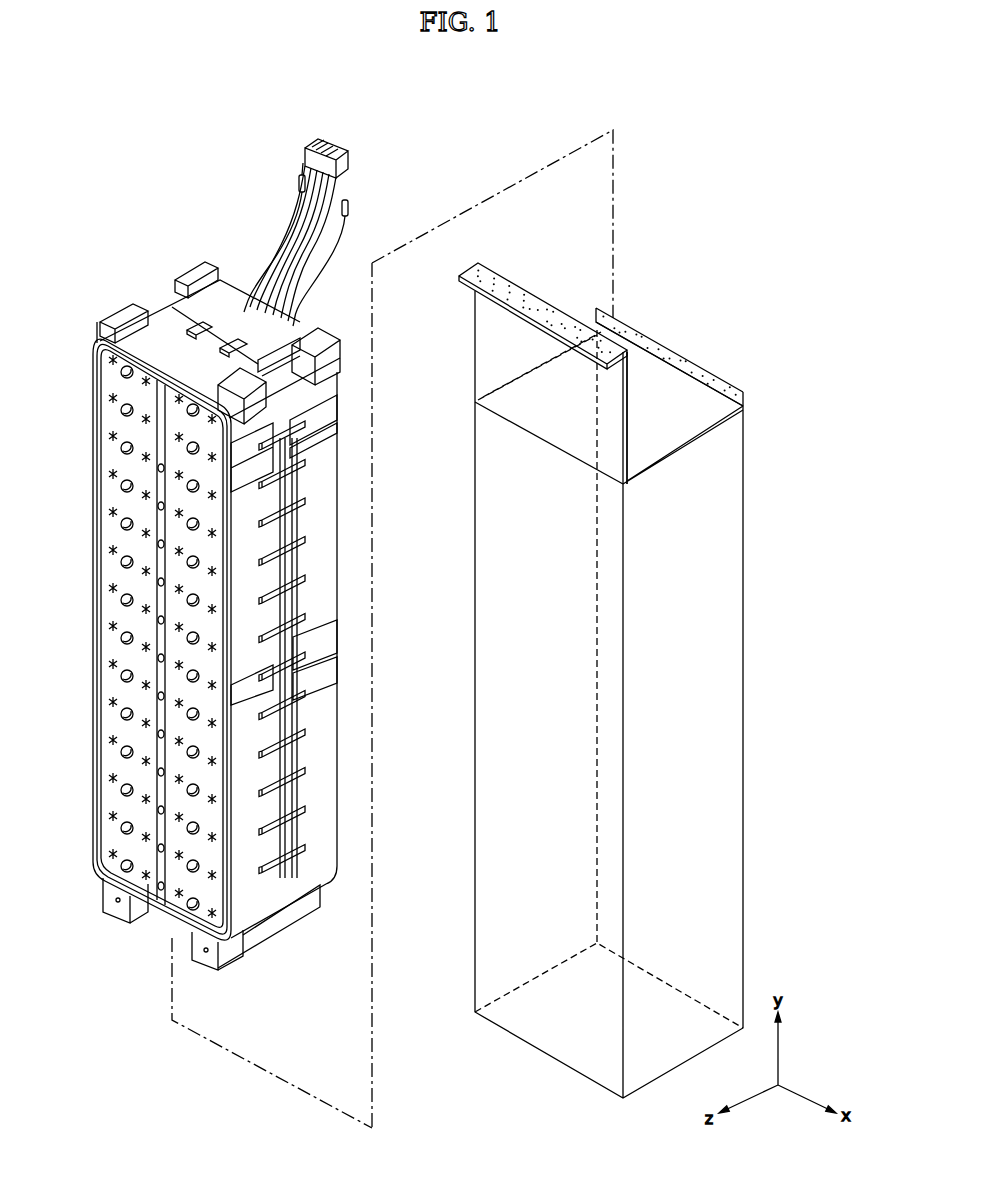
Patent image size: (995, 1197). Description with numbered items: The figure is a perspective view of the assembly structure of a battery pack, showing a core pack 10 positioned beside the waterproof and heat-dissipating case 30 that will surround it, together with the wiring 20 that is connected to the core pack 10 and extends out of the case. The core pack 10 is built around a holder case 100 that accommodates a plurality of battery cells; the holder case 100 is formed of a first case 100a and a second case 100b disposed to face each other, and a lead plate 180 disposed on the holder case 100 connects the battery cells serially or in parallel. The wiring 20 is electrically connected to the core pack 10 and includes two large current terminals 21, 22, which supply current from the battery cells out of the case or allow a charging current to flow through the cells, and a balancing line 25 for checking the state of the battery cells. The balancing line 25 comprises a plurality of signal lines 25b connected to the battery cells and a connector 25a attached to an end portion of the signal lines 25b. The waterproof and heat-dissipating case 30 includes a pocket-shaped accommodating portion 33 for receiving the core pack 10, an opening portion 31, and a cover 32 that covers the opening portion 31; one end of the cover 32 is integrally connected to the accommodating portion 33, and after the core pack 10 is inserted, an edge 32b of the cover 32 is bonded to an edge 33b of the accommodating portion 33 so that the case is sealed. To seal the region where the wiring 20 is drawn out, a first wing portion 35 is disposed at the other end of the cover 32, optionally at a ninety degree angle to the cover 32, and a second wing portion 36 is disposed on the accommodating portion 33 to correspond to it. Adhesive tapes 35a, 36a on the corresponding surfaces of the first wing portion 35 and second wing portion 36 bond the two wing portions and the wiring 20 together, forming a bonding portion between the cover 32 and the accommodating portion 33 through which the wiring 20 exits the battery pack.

The core pack 10 is at (148, 293).
The wiring 20 is at (288, 66).
The large current terminal 21 is at (301, 175).
The large current terminal 22 is at (347, 200).
The balancing line 25 is at (326, 102).
The connector 25a is at (332, 147).
The signal lines 25b is at (352, 172).
The waterproof and heat-dissipating case 30 is at (755, 613).
The opening portion 31 is at (677, 432).
The cover 32 is at (488, 362).
The edge of the cover 32b is at (628, 410).
The accommodating portion 33 is at (725, 761).
The edge of the accommodating portion 33b is at (678, 453).
The first wing portion 35 is at (507, 313).
The adhesive tape 35a is at (525, 303).
The second wing portion 36 is at (687, 358).
The adhesive tape 36a is at (642, 348).
The holder case 100 is at (420, 560).
The first case 100a is at (330, 554).
The second case 100b is at (330, 788).
The lead plate 180 is at (128, 848).